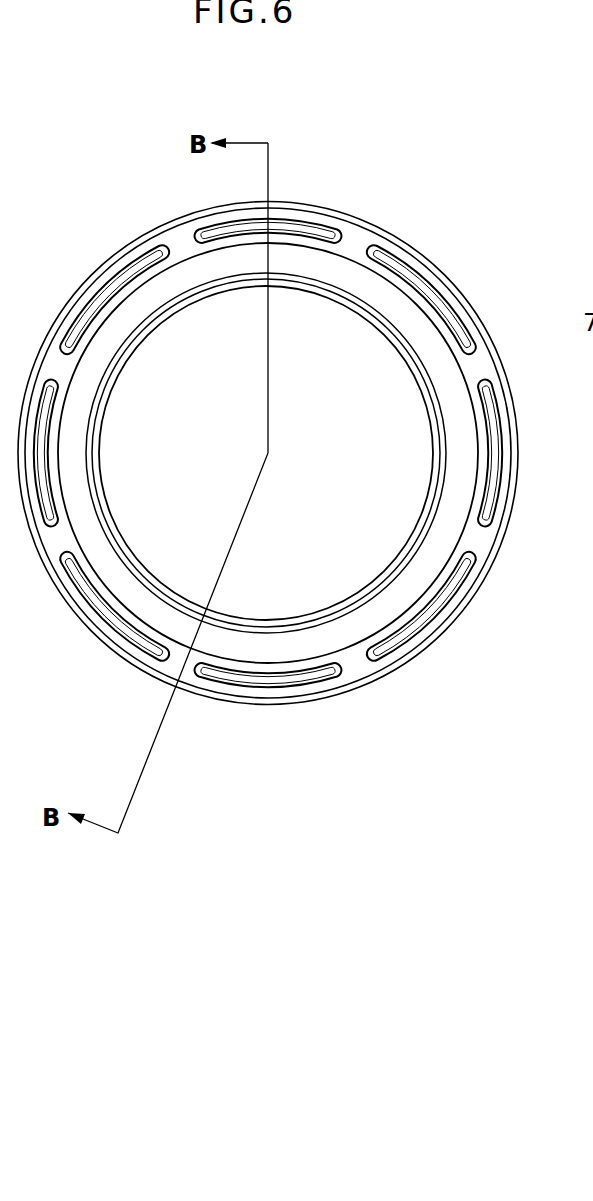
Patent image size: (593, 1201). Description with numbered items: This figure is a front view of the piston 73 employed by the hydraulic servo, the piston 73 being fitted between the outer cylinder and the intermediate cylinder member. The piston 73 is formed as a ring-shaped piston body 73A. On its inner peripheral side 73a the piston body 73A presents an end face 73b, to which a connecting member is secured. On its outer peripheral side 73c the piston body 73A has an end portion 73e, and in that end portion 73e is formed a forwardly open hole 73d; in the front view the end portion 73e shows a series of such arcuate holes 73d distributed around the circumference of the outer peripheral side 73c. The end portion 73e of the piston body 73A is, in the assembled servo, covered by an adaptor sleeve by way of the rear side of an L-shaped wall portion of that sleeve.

The piston 73 is at (363, 221).
The piston body 73A is at (388, 293).
The inner peripheral side 73a is at (440, 450).
The end face 73b is at (437, 405).
The outer peripheral side 73c is at (495, 348).
The hole 73d is at (494, 452).
The end portion 73e is at (503, 524).